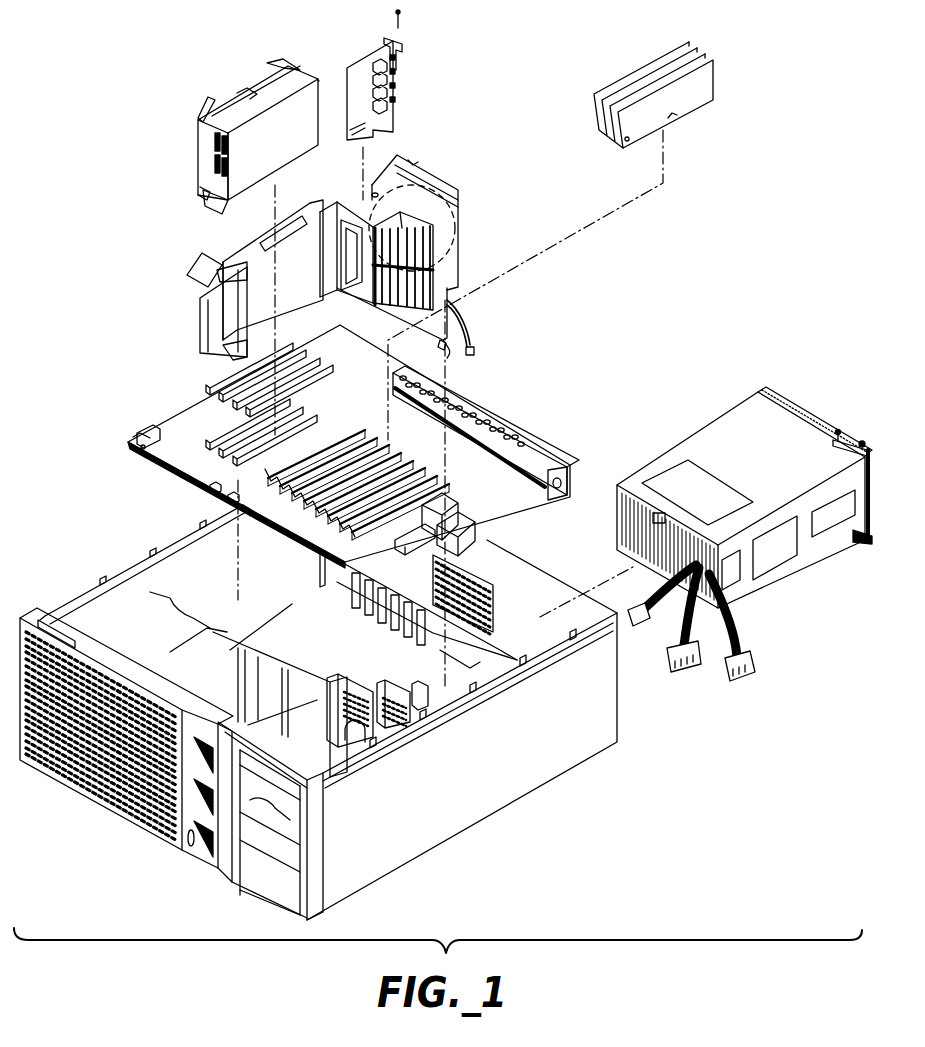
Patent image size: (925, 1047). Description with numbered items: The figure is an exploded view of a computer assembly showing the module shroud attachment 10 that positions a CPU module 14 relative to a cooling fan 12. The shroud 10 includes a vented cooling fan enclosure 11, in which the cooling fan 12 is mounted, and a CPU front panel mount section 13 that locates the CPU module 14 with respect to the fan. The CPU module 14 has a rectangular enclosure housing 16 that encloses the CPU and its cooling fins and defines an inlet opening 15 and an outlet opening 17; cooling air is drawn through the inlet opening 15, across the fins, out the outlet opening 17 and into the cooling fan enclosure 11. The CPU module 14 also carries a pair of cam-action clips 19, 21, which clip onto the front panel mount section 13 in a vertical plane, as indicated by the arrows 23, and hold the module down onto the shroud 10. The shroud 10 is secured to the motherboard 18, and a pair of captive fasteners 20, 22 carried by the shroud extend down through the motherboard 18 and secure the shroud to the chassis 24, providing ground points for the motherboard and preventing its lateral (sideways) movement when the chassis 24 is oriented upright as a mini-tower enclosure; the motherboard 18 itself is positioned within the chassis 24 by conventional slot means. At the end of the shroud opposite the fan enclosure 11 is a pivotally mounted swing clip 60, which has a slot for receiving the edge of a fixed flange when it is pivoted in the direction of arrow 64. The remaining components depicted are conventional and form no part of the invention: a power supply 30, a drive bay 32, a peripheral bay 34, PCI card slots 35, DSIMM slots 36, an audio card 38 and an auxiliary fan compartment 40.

The module shroud attachment 10 is at (313, 243).
The vented cooling fan enclosure 11 is at (465, 215).
The cooling fan 12 is at (460, 248).
The CPU front panel mount section 13 is at (235, 265).
The CPU module 14 is at (198, 152).
The inlet opening 15 is at (174, 185).
The rectangular enclosure housing 16 is at (233, 115).
The outlet opening 17 is at (318, 72).
The motherboard 18 is at (328, 446).
The cam-action clip 19 is at (205, 112).
The captive fastener 20 is at (200, 366).
The cam-action clip 21 is at (277, 62).
The captive fastener 22 is at (445, 360).
The arrows 23 is at (214, 54).
The chassis 24 is at (280, 633).
The power supply 30 is at (695, 424).
The drive bay 32 is at (207, 680).
The peripheral bay 34 is at (274, 840).
The PCI card slots 35 is at (199, 389).
The DSIMM slots 36 is at (464, 448).
The audio card 38 is at (395, 70).
The auxiliary fan compartment 40 is at (318, 712).
The swing clip 60 is at (195, 283).
The arrow 64 is at (130, 253).